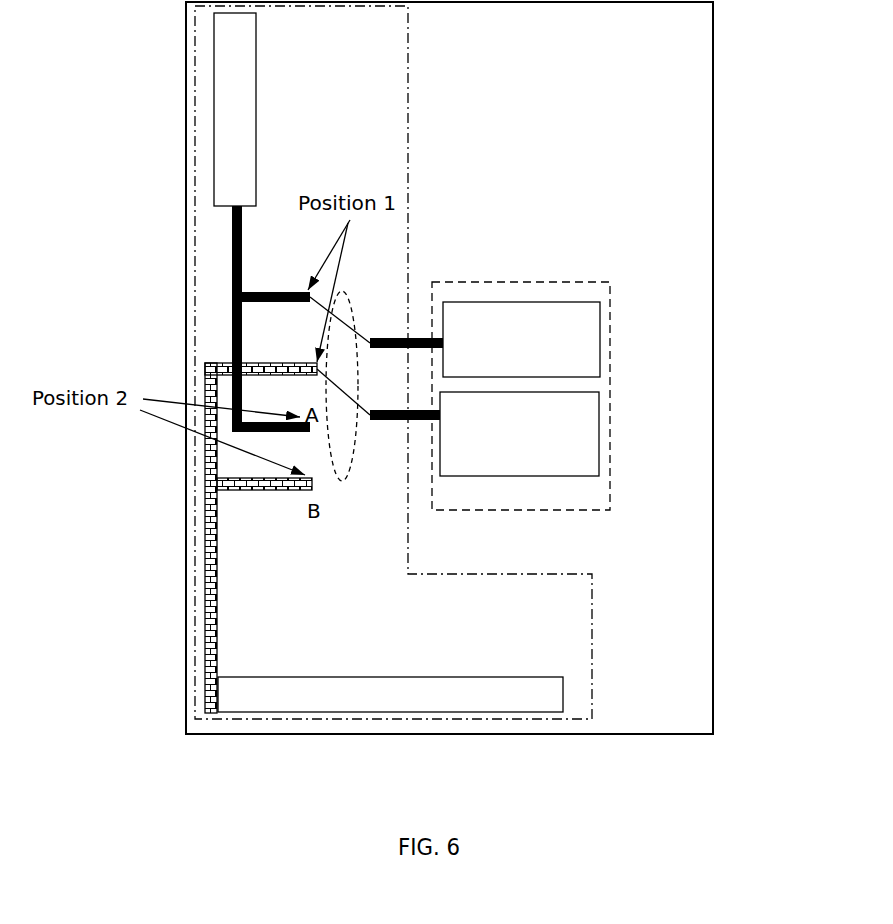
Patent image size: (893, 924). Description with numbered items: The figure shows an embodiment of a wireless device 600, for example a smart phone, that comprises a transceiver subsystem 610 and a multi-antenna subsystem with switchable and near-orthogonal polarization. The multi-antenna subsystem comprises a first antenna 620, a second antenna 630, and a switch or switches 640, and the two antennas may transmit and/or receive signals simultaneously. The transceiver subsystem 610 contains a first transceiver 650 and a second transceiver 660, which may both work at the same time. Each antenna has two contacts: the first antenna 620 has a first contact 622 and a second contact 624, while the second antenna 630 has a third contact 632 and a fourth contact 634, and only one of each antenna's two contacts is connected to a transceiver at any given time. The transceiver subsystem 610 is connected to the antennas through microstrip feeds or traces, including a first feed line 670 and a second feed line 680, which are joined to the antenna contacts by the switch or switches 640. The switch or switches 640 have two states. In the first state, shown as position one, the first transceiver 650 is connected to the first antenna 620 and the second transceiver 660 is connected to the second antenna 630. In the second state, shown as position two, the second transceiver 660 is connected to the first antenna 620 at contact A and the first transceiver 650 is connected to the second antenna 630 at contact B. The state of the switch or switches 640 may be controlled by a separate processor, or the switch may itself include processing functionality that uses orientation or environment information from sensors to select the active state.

The wireless device 600 is at (713, 620).
The transceiver subsystem 610 is at (533, 510).
The first antenna 620 is at (263, 80).
The first contact 622 is at (297, 293).
The second contact 624 is at (265, 432).
The second antenna 630 is at (442, 675).
The third contact 632 is at (295, 362).
The fourth contact 634 is at (282, 488).
The switch/switches 640 is at (355, 300).
The first transceiver 650 is at (600, 340).
The second transceiver 660 is at (599, 458).
The first feed line 670 is at (400, 348).
The second feed line 680 is at (400, 420).